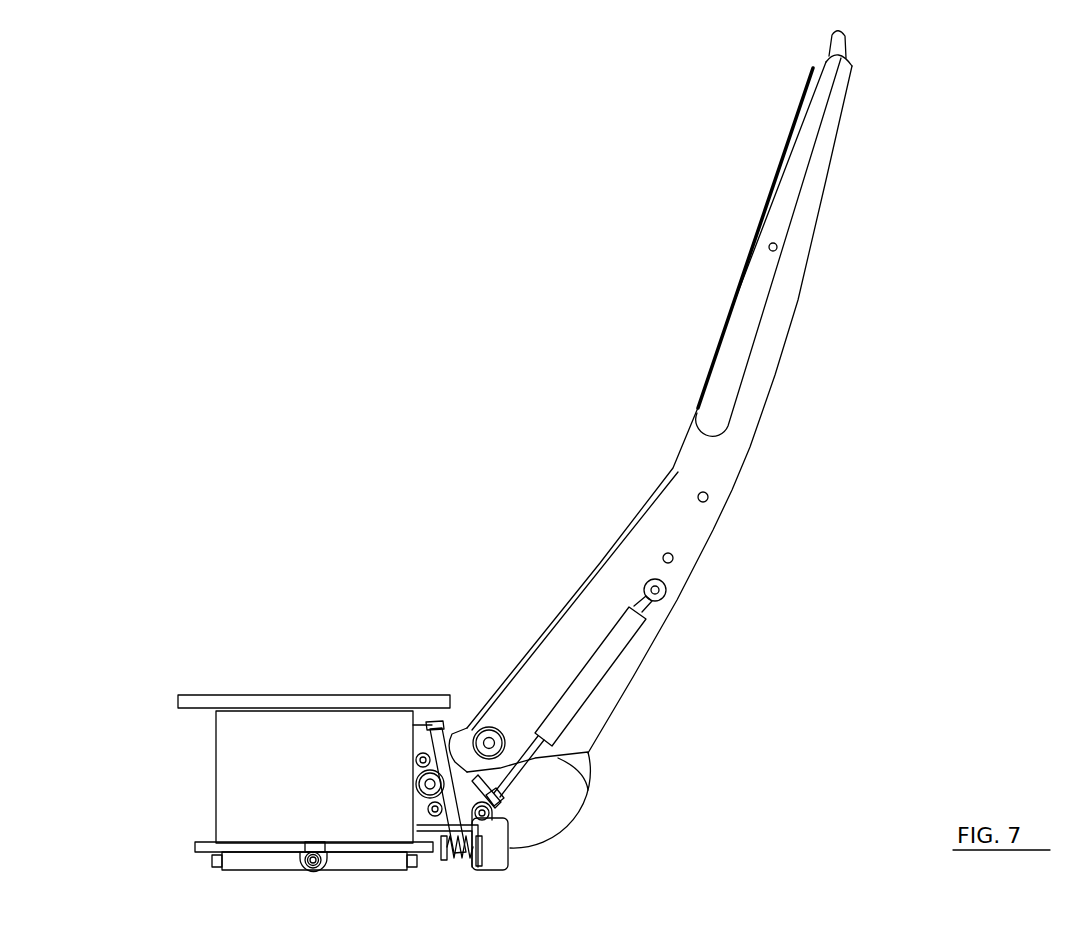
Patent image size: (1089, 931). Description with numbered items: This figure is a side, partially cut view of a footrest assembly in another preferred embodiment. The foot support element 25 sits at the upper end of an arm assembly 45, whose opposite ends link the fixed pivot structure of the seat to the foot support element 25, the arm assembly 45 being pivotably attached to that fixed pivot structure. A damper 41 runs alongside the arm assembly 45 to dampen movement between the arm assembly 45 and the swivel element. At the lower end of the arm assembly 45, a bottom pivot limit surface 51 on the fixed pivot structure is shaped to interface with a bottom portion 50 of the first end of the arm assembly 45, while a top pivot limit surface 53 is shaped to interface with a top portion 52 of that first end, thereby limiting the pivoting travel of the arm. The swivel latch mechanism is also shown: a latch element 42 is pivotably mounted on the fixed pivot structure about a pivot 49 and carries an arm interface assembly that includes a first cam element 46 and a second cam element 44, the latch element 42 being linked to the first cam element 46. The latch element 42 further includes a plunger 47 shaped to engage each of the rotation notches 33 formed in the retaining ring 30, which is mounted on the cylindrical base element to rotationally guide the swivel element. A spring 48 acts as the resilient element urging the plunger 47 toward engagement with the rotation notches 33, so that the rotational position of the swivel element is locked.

The foot support element 25 is at (838, 68).
The arm assembly 45 is at (693, 533).
The damper 41 is at (595, 667).
The bottom portion 50 is at (592, 785).
The second cam element 44 is at (462, 732).
The top portion 52 is at (480, 768).
The top pivot limit surface 53 is at (500, 818).
The bottom pivot limit surface 51 is at (513, 857).
The plunger 47 is at (440, 853).
The spring 48 is at (457, 860).
The first cam element 46 is at (432, 718).
The pivot 49 is at (417, 797).
The latch element 42 is at (437, 740).
The retaining ring 30 is at (340, 847).
The rotation notches 33 is at (313, 845).